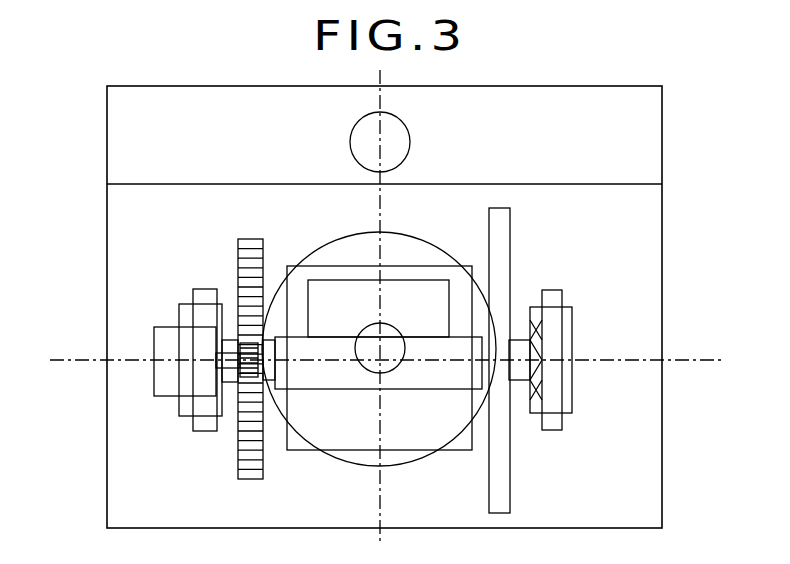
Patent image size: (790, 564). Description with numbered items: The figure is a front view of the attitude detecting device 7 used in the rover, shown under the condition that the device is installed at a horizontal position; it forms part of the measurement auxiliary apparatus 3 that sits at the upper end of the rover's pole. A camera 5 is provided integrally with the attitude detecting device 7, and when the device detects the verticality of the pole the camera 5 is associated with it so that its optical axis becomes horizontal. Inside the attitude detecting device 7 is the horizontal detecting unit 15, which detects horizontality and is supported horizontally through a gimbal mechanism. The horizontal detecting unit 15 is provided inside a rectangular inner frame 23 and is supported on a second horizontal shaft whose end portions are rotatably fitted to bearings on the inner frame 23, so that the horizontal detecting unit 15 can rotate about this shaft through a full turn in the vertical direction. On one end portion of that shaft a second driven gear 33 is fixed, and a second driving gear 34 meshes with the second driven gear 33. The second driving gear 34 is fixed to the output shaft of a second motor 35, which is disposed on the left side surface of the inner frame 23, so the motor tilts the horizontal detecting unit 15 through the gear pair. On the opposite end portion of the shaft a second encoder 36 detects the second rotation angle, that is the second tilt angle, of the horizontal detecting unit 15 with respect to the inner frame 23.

The measurement auxiliary apparatus 3 is at (662, 278).
The camera 5 is at (404, 118).
The attitude detecting device 7 is at (140, 228).
The horizontal detecting unit 15 is at (342, 265).
The inner frame 23 is at (202, 288).
The second driven gear 33 is at (250, 480).
The second driving gear 34 is at (252, 385).
The second motor 35 is at (165, 397).
The second encoder 36 is at (512, 243).